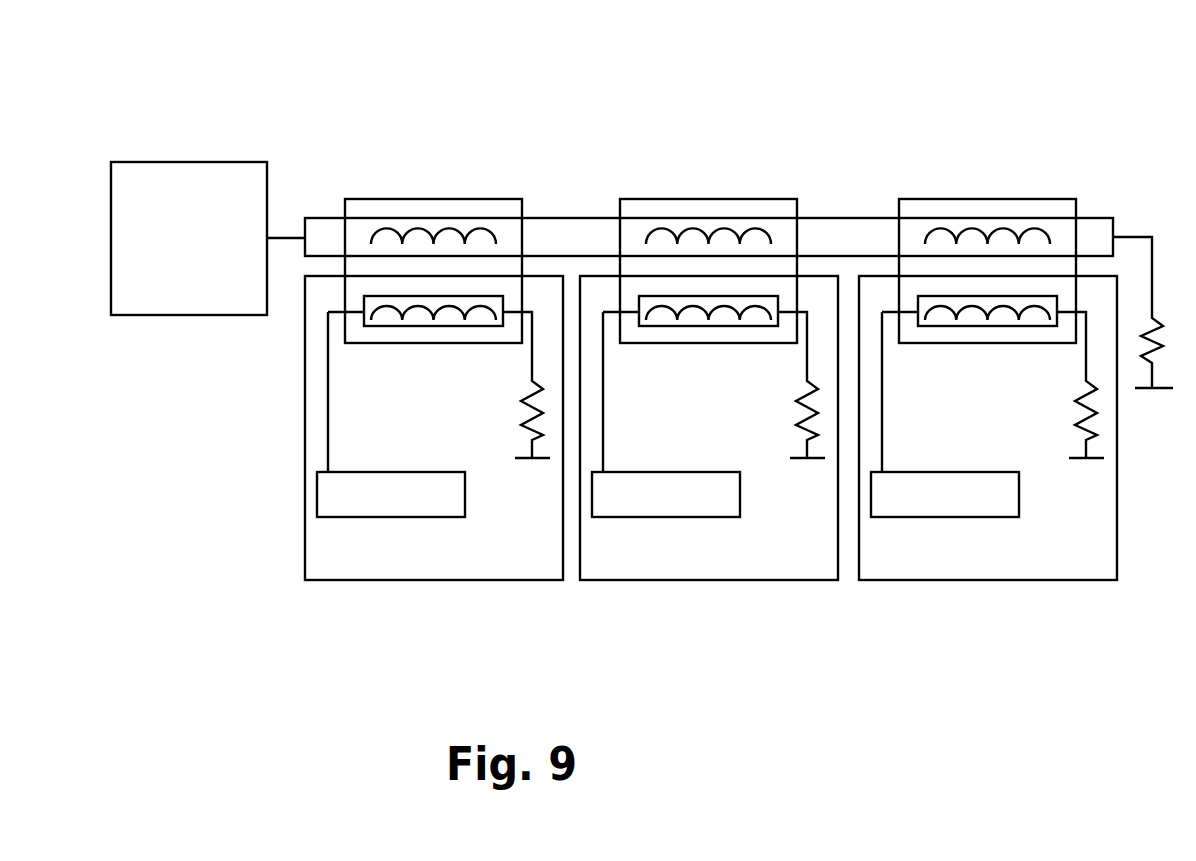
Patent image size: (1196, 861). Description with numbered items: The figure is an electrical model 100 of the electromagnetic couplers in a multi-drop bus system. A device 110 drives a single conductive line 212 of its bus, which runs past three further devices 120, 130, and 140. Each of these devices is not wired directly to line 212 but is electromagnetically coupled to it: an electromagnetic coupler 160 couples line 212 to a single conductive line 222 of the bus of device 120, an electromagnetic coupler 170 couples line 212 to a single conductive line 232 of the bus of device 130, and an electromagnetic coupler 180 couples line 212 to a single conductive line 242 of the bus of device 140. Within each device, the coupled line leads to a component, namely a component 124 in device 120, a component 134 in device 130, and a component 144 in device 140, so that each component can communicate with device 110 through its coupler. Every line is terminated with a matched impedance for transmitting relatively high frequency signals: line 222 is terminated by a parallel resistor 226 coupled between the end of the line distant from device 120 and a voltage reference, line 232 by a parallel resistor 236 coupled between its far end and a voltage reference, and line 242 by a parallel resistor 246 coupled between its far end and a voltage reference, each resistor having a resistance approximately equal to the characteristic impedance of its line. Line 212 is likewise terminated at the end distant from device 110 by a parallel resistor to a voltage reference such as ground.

The electrical model 100 is at (592, 108).
The device 110 is at (192, 162).
The conductive line 212 is at (285, 238).
The electromagnetic coupler 160 is at (443, 199).
The electromagnetic coupler 170 is at (708, 230).
The electromagnetic coupler 180 is at (987, 230).
The device 120 is at (434, 466).
The device 130 is at (709, 470).
The device 140 is at (988, 477).
The conductive line 222 is at (328, 426).
The parallel resistor 226 is at (532, 412).
The component 124 is at (465, 493).
The conductive line 232 is at (649, 392).
The parallel resistor 236 is at (783, 402).
The component 134 is at (707, 505).
The conductive line 242 is at (928, 392).
The parallel resistor 246 is at (1062, 402).
The component 144 is at (986, 505).